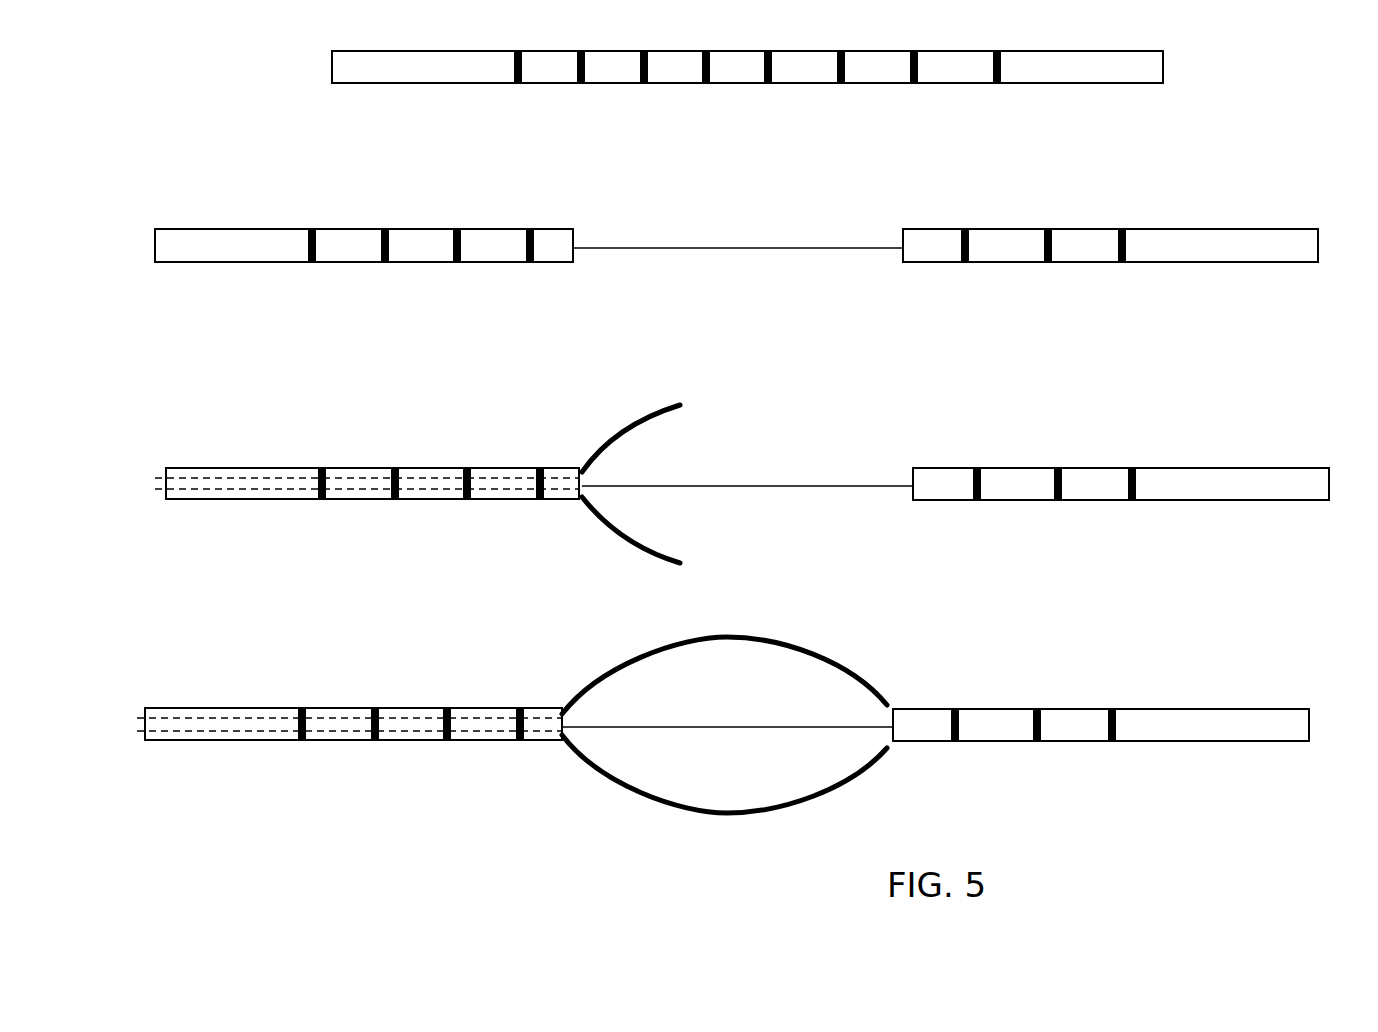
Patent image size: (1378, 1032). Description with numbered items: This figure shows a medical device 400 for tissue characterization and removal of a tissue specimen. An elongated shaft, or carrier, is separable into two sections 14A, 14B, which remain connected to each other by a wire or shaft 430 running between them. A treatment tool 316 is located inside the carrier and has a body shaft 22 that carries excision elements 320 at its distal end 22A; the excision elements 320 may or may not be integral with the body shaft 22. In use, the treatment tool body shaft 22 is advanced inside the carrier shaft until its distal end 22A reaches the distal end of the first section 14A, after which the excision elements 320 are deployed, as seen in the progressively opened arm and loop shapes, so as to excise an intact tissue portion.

The medical device 400 is at (483, 105).
The wire or shaft 430 is at (740, 240).
The first section of the elongated shaft 14A is at (413, 263).
The second section of the elongated shaft 14B is at (1068, 263).
The treatment tool 316 is at (248, 475).
The body shaft 22 is at (197, 480).
The distal end of the body shaft 22A is at (572, 478).
The excision elements 320 is at (598, 533).